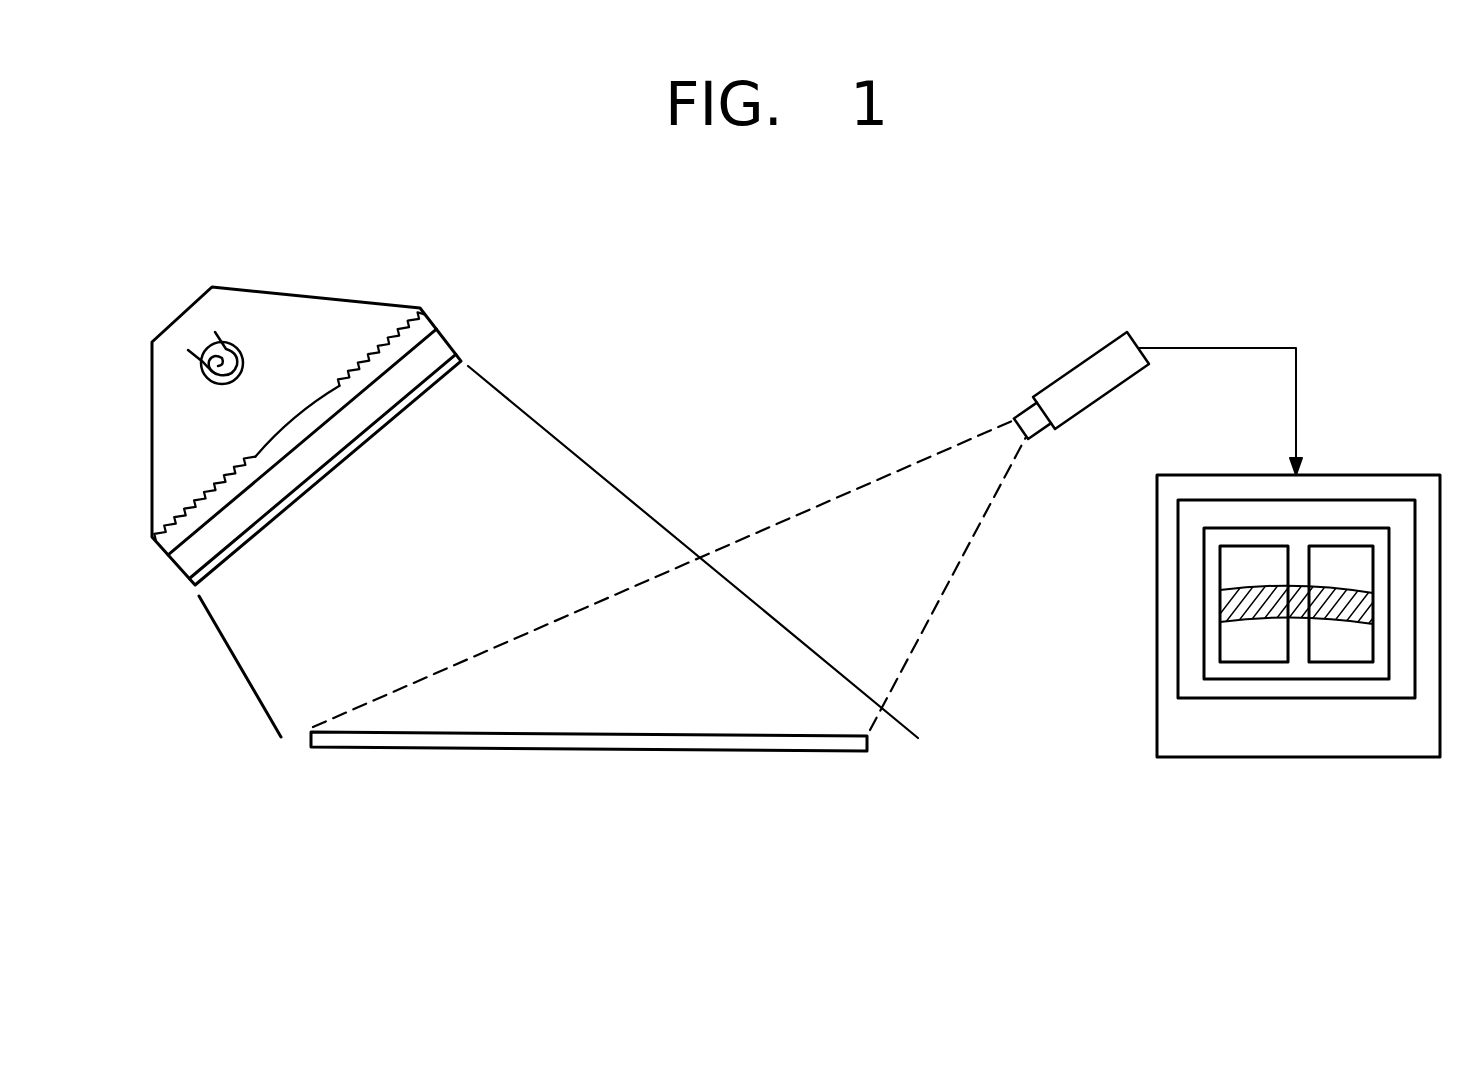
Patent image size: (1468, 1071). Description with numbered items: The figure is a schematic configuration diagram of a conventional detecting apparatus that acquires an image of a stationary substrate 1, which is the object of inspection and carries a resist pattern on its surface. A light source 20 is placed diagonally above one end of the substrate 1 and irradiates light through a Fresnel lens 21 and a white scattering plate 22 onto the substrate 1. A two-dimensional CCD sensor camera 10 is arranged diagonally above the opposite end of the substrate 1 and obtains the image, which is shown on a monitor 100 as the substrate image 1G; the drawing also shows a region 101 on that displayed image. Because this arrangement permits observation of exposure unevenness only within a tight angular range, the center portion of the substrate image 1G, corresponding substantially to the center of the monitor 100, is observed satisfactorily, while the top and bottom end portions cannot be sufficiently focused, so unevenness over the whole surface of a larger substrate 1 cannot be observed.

The substrate 1 is at (387, 742).
The two-dimensional CCD sensor camera 10 is at (1055, 330).
The light source 20 is at (244, 362).
The Fresnel lens 21 is at (261, 461).
The white scattering plate 22 is at (345, 453).
The monitor 100 is at (1355, 772).
The defect image 101 is at (1238, 588).
The substrate image 1G is at (1357, 541).